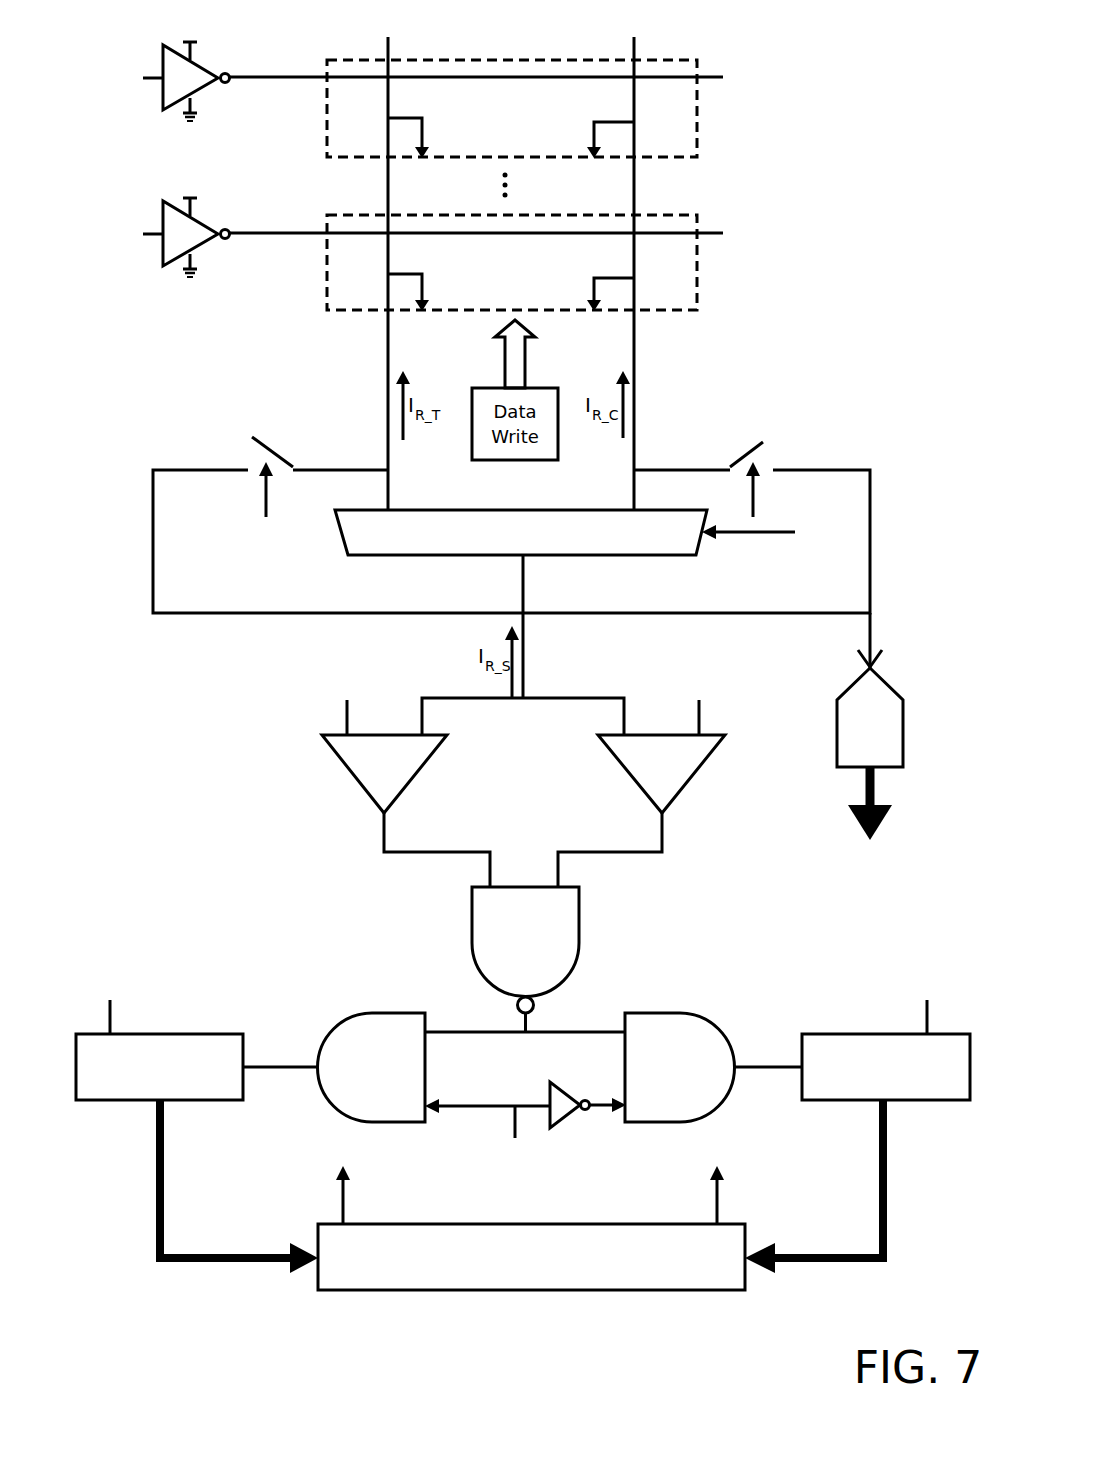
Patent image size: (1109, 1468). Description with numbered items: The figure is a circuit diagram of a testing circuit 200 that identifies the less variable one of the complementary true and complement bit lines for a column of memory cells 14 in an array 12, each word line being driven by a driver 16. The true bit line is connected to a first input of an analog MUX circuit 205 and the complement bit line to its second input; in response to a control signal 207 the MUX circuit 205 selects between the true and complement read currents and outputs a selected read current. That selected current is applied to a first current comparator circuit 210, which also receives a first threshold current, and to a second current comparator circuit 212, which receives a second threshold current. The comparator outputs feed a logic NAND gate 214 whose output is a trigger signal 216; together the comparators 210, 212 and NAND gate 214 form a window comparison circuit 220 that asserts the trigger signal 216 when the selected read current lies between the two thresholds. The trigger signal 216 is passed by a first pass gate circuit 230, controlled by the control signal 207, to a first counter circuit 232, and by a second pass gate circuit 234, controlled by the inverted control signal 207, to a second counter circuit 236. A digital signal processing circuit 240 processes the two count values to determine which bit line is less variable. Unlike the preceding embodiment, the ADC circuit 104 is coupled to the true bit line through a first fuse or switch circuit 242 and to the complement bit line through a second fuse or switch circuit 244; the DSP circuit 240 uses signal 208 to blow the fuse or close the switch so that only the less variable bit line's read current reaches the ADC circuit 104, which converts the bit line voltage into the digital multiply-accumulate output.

The array 12 is at (722, 170).
The memory cells 14 is at (697, 108).
The word line driver 16 is at (163, 96).
The analog-to-digital converter (ADC) circuit 104 is at (838, 697).
The testing circuit 200 is at (223, 733).
The analog multiplexer (MUX) circuit 205 is at (335, 532).
The control signal 207 is at (760, 532).
The signal 208 is at (262, 497).
The first current comparator circuit 210 is at (345, 772).
The second current comparator circuit 212 is at (695, 780).
The logic NAND gate 214 is at (470, 923).
The trigger signal 216 is at (600, 1032).
The window comparison circuit 220 is at (684, 893).
The first pass gate circuit 230 is at (340, 1020).
The first counter circuit 232 is at (158, 1034).
The second pass gate circuit 234 is at (708, 1015).
The second counter circuit 236 is at (885, 1034).
The digital signal processing (DSP) circuit 240 is at (577, 1290).
The first fuse (or switch) circuit 242 is at (250, 456).
The second fuse (or switch) circuit 244 is at (775, 453).